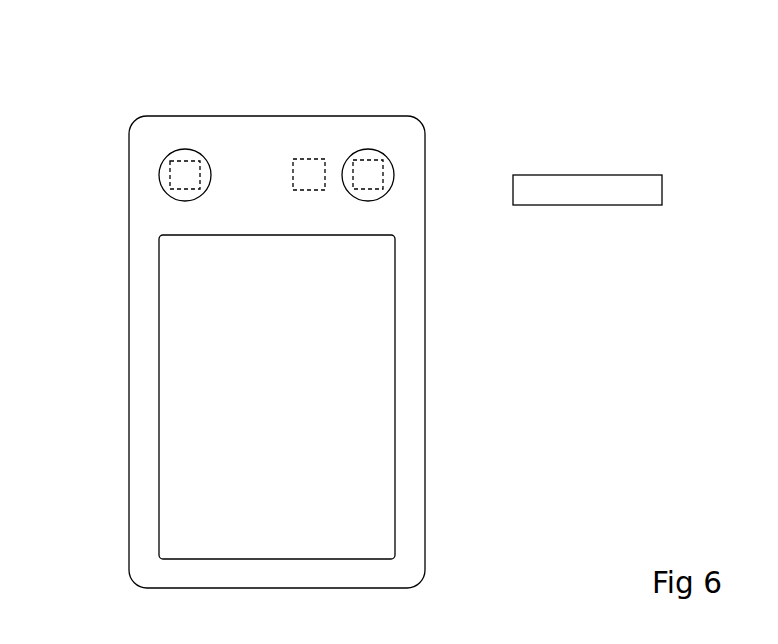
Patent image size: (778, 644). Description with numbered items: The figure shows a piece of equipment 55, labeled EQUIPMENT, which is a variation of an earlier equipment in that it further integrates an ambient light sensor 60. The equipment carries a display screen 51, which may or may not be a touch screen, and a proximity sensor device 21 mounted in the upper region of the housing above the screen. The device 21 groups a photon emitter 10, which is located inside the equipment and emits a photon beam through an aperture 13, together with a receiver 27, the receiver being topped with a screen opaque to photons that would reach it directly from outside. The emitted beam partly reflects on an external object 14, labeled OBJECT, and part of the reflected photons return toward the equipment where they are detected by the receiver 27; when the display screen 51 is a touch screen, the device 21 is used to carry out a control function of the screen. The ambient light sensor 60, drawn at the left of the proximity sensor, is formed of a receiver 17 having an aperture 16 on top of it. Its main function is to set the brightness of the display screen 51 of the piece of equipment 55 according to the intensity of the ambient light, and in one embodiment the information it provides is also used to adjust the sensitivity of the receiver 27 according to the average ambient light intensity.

The photon emitter 10 is at (367, 167).
The aperture 13 is at (394, 177).
The object 14 is at (638, 192).
The aperture 16 is at (163, 162).
The receiver 17 is at (188, 163).
The device 21 is at (411, 123).
The receiver 27 is at (313, 159).
The display screen 51 is at (185, 393).
The piece of equipment 55 is at (403, 523).
The ambient light sensor 60 is at (116, 141).